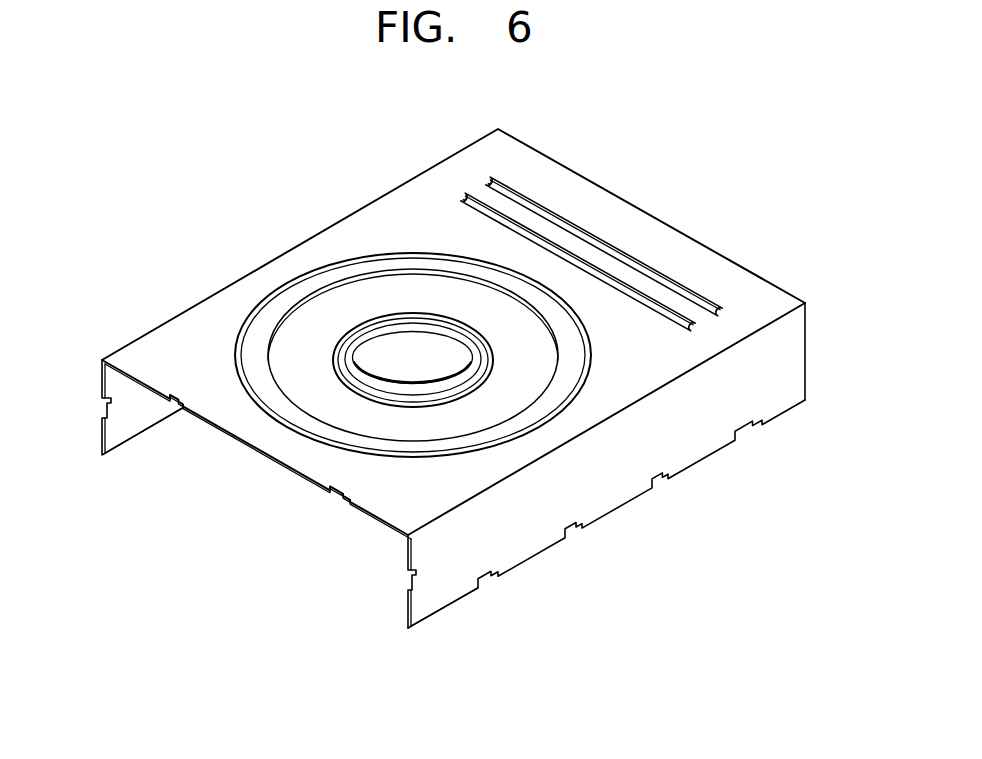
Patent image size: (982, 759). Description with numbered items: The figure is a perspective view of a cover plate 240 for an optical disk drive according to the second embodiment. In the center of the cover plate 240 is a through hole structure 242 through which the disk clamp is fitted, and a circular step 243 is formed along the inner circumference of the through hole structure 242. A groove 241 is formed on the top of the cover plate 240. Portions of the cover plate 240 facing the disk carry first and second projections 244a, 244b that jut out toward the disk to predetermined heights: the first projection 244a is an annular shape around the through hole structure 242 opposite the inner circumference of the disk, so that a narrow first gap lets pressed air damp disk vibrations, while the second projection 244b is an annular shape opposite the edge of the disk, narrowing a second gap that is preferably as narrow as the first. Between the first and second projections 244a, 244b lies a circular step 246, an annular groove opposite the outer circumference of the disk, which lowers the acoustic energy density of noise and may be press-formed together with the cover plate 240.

The cover plate 240 is at (222, 267).
The groove 241 is at (602, 248).
The through hole structure 242 is at (402, 360).
The circular step 243 is at (320, 317).
The first projection 244a is at (268, 370).
The second projection 244b is at (237, 360).
The circular step 246 is at (287, 407).